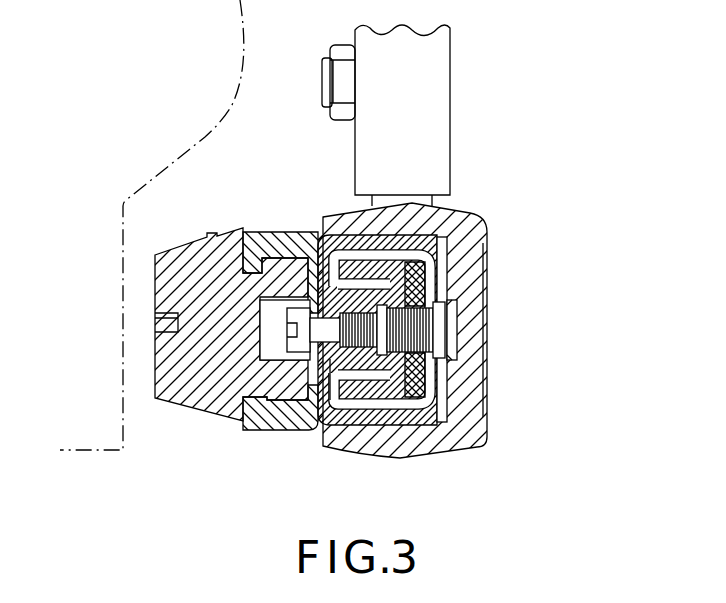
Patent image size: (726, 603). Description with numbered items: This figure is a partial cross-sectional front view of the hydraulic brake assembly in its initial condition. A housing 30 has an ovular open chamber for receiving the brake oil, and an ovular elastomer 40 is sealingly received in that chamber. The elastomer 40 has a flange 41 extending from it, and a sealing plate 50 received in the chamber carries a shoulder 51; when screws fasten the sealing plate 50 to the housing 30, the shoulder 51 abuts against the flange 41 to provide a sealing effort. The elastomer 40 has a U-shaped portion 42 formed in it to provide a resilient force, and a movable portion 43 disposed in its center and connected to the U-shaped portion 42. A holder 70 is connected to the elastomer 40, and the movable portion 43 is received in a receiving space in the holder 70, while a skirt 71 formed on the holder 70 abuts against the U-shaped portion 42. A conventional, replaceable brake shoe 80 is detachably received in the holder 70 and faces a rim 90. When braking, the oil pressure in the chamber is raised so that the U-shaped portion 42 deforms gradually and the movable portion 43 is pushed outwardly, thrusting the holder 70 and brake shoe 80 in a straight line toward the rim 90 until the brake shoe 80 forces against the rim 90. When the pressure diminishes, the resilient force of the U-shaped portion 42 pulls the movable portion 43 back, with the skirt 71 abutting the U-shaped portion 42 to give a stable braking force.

The housing 30 is at (483, 218).
The elastomer 40 is at (333, 271).
The flange 41 is at (483, 243).
The U-shaped portion 42 is at (392, 283).
The movable portion 43 is at (360, 367).
The sealing plate 50 is at (423, 362).
The shoulder 51 is at (415, 268).
The holder 70 is at (290, 430).
The skirt 71 is at (333, 395).
The brake shoe 80 is at (192, 408).
The rim 90 is at (100, 427).